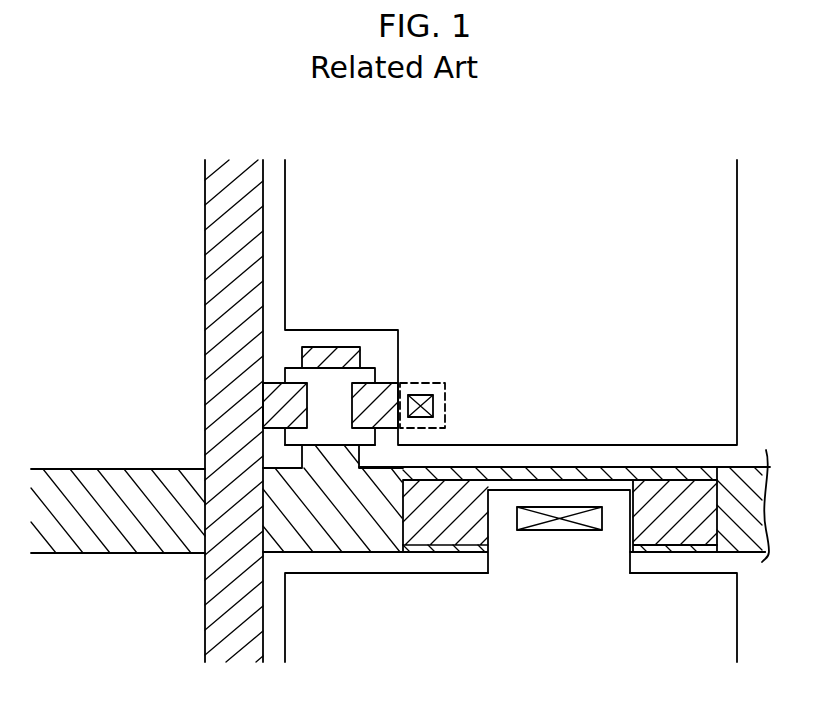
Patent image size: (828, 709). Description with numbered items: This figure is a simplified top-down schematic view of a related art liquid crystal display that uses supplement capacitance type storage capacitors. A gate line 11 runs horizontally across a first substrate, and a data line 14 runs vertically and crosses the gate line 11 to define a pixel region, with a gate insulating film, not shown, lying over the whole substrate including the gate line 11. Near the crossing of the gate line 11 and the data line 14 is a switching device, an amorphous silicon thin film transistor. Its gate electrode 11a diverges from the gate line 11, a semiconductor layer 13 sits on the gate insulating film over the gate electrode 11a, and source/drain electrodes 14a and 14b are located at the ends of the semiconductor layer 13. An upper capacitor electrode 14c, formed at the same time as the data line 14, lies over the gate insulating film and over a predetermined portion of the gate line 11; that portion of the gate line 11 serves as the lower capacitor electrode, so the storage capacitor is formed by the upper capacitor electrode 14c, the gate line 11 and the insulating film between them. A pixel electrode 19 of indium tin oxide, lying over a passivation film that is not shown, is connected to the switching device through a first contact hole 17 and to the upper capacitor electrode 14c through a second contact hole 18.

The gate line 11 is at (745, 470).
The gate electrode 11a is at (345, 356).
The semiconductor layer 13 is at (338, 432).
The data line 14 is at (212, 314).
The source/drain electrode 14a is at (270, 402).
The source/drain electrode 14b is at (387, 392).
The upper capacitor electrode 14c is at (668, 533).
The first contact hole 17 is at (436, 406).
The second contact hole 18 is at (560, 532).
The pixel electrode 19 is at (730, 620).